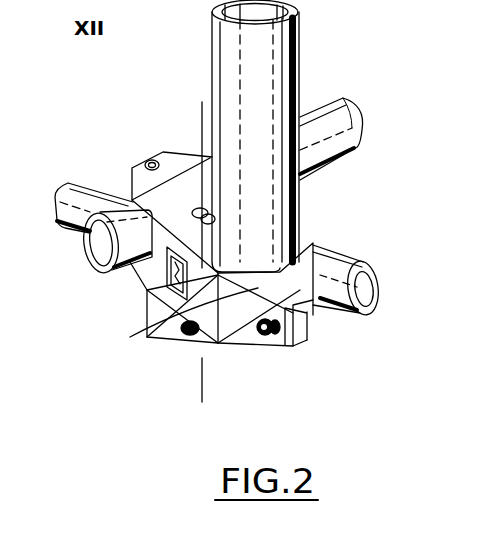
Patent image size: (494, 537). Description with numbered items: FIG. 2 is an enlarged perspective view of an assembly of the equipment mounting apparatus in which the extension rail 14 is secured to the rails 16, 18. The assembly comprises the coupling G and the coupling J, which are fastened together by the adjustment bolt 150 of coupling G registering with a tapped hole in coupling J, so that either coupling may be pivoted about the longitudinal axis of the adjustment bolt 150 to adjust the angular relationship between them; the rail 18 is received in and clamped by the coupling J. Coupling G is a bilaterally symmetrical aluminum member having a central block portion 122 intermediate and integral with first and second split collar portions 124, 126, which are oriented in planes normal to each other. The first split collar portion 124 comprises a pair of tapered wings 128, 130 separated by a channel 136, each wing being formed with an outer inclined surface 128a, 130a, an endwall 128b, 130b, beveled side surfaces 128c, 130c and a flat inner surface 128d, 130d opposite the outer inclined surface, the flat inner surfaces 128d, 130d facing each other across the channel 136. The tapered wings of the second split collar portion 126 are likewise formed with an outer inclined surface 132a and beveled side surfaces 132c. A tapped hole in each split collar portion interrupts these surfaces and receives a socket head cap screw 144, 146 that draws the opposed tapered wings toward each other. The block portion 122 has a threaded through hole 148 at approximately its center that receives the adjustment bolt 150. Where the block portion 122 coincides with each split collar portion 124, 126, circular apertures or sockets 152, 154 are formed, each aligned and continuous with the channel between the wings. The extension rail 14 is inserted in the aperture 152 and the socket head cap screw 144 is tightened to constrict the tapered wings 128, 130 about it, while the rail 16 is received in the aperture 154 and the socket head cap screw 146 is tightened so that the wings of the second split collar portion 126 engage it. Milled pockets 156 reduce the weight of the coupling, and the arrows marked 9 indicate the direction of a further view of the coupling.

The section line 9- 9 is at (192, 118).
The coupling J is at (184, 376).
The extension rail 14 is at (295, 42).
The rail 16 is at (350, 108).
The rail 18 is at (356, 262).
The central block portion 122 is at (190, 241).
The first split collar portion 124 is at (307, 345).
The second split collar portion 126 is at (133, 168).
The tapered wing 128 is at (307, 296).
The outer inclined surface 128a is at (318, 327).
The endwall 128b is at (307, 338).
The beveled side surfaces 128c is at (352, 292).
The flat inner surface 128d is at (318, 252).
The tapered wing 130 is at (160, 340).
The outer inclined surface 130a is at (278, 343).
The endwall 130b is at (300, 350).
The beveled side surfaces 130c is at (265, 343).
The flat inner surface 130d is at (197, 352).
The outer inclined surface 132a is at (200, 157).
The beveled side surfaces 132c is at (163, 150).
The channel 136 is at (300, 248).
The socket head cap screw 144 is at (262, 337).
The socket head cap screw 146 is at (150, 163).
The threaded through hole 148 is at (115, 186).
The adjustment bolt 150 is at (215, 228).
The circular aperture 152 is at (157, 333).
The circular aperture 154 is at (130, 276).
The milled pocket 156 is at (147, 305).